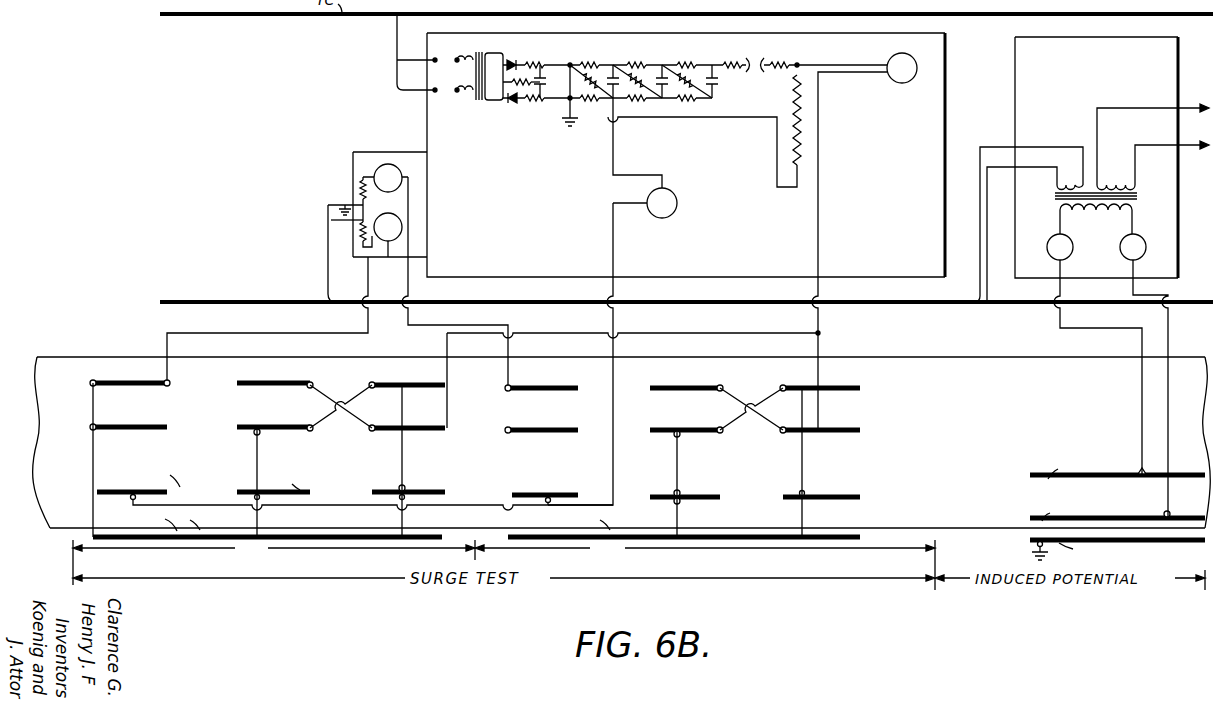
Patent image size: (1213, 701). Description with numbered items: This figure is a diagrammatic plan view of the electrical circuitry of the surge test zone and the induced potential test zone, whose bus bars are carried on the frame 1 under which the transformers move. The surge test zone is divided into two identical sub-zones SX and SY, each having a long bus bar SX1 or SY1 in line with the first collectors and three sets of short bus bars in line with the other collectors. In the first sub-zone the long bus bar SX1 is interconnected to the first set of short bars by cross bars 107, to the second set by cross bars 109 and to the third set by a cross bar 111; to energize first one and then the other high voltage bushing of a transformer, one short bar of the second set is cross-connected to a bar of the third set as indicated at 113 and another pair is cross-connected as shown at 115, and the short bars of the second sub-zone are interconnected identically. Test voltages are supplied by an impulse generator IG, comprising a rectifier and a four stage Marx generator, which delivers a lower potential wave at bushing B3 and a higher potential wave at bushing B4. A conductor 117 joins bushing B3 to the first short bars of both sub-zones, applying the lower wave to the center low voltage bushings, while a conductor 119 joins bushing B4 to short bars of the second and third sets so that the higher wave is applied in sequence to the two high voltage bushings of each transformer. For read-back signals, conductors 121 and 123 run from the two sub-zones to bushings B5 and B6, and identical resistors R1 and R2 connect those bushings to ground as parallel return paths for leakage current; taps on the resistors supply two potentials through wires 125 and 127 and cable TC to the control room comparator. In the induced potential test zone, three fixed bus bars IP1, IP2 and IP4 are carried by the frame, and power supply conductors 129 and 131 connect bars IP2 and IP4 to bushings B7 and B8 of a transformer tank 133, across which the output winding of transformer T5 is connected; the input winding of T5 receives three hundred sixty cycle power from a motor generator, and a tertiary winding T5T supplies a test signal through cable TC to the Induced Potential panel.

The transformer 1 is at (85, 355).
The cross bars 107 is at (93, 458).
The cross bars 109 is at (257, 471).
The cross bar 111 is at (402, 520).
The cross-connection 113 is at (342, 410).
The cross-connection 115 is at (356, 418).
The conductor 117 is at (613, 292).
The conductor 119 is at (818, 346).
The conductor 121 is at (240, 333).
The conductor 123 is at (455, 325).
The wire 125 is at (328, 205).
The wire 127 is at (331, 220).
The power supply conductor 129 is at (1142, 400).
The power supply conductor 131 is at (1168, 408).
The transformer tank 133 is at (1178, 214).
The impulse generator IG is at (424, 127).
The cable TC is at (252, 302).
The bushing B3 is at (672, 212).
The bushing B4 is at (905, 83).
The bushing B5 is at (392, 242).
The bushing B6 is at (385, 165).
The bushing B7 is at (1065, 258).
The bushing B8 is at (1138, 258).
The resistor R1 is at (362, 242).
The resistor R2 is at (360, 191).
The transformer T5 is at (1138, 184).
The tertiary winding T5T is at (1054, 183).
The sub-zone SX is at (274, 562).
The sub-zone SY is at (705, 565).
The long bus bar SX1 is at (267, 525).
The long bus bar SY1 is at (684, 525).
The fixed bus bar IP1 is at (1117, 549).
The fixed bus bar IP2 is at (1117, 508).
The fixed bus bar IP4 is at (1117, 465).